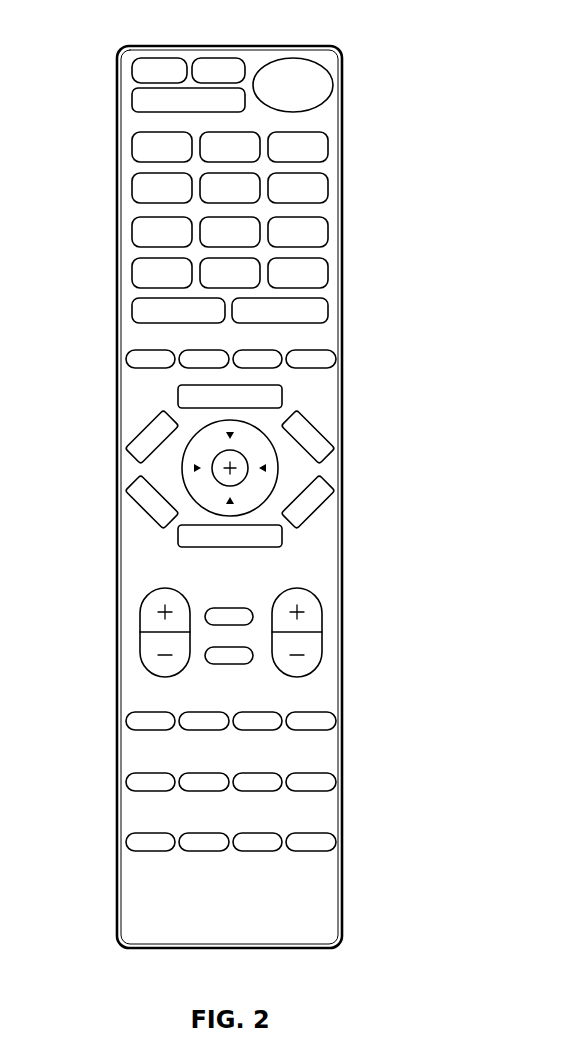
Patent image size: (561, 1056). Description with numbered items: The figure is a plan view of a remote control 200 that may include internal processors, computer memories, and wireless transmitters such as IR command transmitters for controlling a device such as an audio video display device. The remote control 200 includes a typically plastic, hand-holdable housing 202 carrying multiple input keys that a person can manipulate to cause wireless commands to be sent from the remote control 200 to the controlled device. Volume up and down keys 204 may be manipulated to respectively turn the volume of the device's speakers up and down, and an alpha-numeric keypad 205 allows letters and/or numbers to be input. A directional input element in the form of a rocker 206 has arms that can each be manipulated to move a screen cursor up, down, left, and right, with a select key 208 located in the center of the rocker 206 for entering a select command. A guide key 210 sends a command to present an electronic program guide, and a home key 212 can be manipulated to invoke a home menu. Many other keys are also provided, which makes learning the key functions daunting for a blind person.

The remote control 200 is at (405, 105).
The housing 202 is at (117, 67).
The volume up and down keys 204 is at (140, 618).
The alpha-numeric keypad 205 is at (135, 167).
The rocker 206 is at (266, 468).
The select key 208 is at (212, 476).
The guide key 210 is at (322, 426).
The home key 212 is at (322, 506).